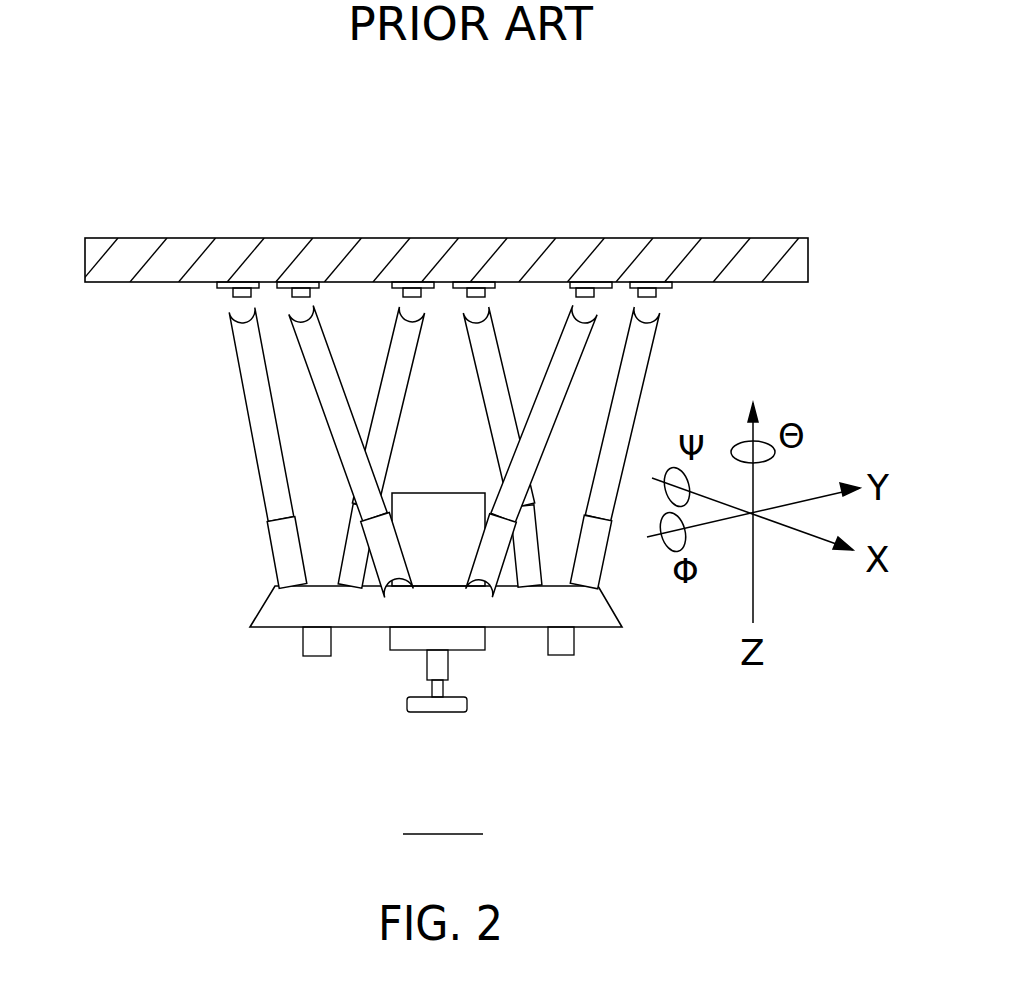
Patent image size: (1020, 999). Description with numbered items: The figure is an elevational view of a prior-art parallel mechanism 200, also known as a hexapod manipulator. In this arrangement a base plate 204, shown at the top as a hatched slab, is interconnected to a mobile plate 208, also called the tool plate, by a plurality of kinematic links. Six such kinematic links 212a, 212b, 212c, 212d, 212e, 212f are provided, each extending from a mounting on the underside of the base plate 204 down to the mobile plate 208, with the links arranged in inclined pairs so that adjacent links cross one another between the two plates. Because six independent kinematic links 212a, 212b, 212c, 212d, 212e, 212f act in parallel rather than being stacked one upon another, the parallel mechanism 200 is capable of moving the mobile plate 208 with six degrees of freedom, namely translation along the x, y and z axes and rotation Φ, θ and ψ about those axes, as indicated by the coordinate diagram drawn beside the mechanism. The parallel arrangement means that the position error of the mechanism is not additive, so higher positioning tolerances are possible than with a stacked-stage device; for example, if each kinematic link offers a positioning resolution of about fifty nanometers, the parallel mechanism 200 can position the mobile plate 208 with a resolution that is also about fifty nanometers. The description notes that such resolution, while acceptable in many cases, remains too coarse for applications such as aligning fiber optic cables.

The parallel mechanism 200 is at (443, 809).
The base plate 204 is at (707, 255).
The mobile plate 208 is at (588, 627).
The kinematic link 212a is at (313, 338).
The kinematic link 212b is at (273, 485).
The kinematic link 212c is at (397, 360).
The kinematic link 212d is at (482, 338).
The kinematic link 212e is at (630, 375).
The kinematic link 212f is at (573, 333).